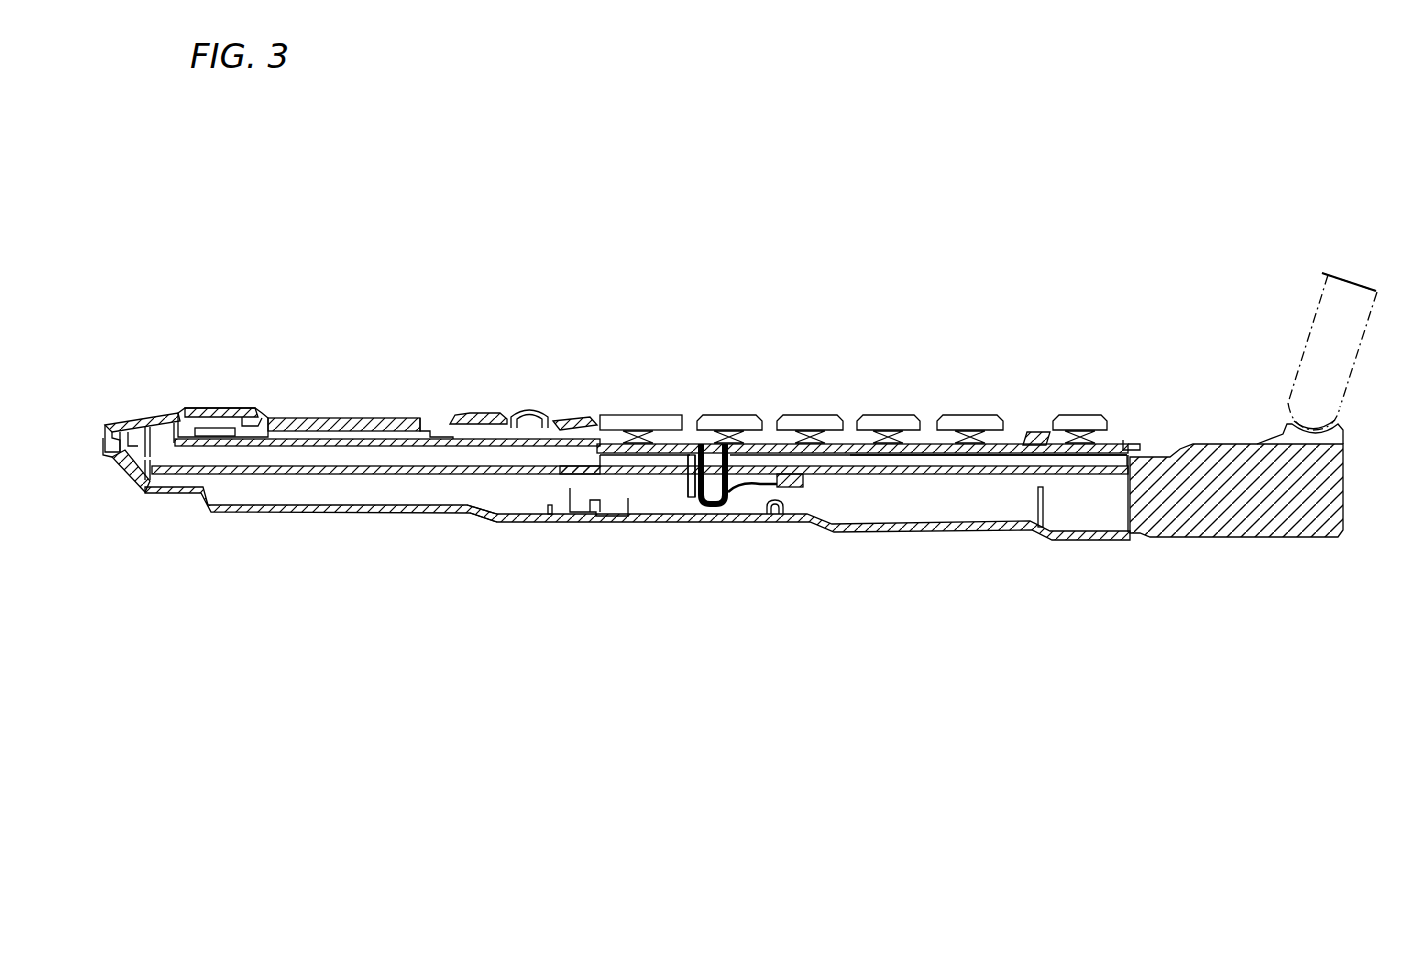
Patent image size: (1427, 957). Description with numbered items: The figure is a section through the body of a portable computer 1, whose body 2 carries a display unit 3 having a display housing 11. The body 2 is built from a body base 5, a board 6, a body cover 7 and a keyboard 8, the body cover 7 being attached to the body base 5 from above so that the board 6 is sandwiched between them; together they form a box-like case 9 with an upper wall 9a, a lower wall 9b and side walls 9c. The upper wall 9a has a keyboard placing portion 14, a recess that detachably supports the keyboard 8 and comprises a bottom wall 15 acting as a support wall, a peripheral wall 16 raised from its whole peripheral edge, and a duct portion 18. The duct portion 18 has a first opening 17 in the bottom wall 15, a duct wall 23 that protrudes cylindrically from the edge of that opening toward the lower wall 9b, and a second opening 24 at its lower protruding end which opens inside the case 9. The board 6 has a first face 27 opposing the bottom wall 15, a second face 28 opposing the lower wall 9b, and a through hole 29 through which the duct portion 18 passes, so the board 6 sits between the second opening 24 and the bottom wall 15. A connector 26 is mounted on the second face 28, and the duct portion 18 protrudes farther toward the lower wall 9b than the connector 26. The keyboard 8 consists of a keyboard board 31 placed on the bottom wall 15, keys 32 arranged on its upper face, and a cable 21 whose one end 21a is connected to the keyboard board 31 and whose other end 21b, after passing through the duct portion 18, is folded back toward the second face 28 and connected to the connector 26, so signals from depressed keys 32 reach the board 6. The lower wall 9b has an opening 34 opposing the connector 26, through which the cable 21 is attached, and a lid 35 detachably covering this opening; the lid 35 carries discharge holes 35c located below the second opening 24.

The portable computer 1 is at (462, 78).
The body 2 is at (603, 165).
The display unit 3 is at (1317, 286).
The body base 5 is at (177, 505).
The board 6 is at (306, 478).
The body cover 7 is at (161, 406).
The keyboard 8 is at (1042, 418).
The case 9 is at (1079, 551).
The upper wall 9a is at (568, 428).
The lower wall 9b is at (558, 525).
The side walls 9c is at (101, 426).
The display housing 11 is at (1368, 318).
The keyboard placing portion 14 is at (909, 434).
The bottom wall 15 is at (861, 453).
The peripheral wall 16 is at (610, 427).
The first opening 17 is at (716, 432).
The duct portion 18 is at (677, 498).
The cable 21 is at (746, 511).
The one end of the cable 21a is at (590, 470).
The other end of the cable 21b is at (773, 490).
The duct wall 23 is at (682, 486).
The second opening 24 is at (704, 510).
The connector 26 is at (800, 490).
The first face 27 is at (486, 418).
The second face 28 is at (469, 480).
The through hole 29 is at (760, 430).
The keyboard board 31 is at (840, 430).
The keys 32 is at (660, 423).
The opening 34 is at (611, 525).
The lid 35 is at (648, 534).
The discharge holes 35c is at (696, 515).